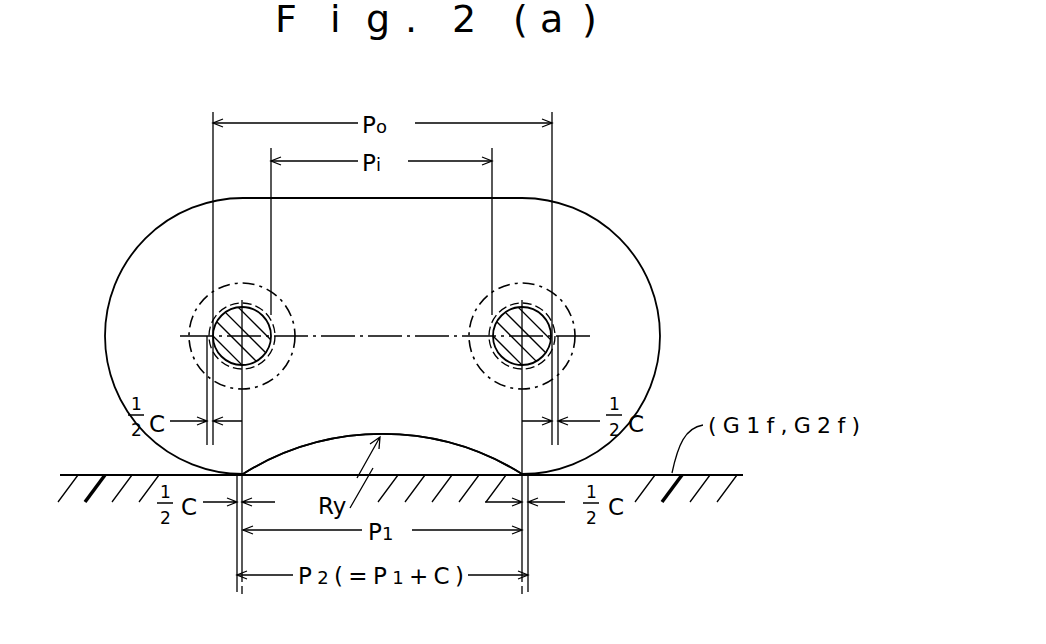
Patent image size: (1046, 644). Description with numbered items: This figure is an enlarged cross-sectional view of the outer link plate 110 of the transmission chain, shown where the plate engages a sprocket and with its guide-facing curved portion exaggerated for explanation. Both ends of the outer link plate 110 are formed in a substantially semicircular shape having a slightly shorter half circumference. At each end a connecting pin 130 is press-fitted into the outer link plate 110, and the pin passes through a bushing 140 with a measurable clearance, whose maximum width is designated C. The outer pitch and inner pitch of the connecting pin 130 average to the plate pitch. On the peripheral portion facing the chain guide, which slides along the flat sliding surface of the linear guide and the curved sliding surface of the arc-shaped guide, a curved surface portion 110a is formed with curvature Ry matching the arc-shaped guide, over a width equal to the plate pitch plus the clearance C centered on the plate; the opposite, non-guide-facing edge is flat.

The outer link plate 110 is at (640, 257).
The curved surface portion 110a is at (427, 440).
The connecting pin 130 is at (228, 302).
The bushing 140 is at (237, 287).